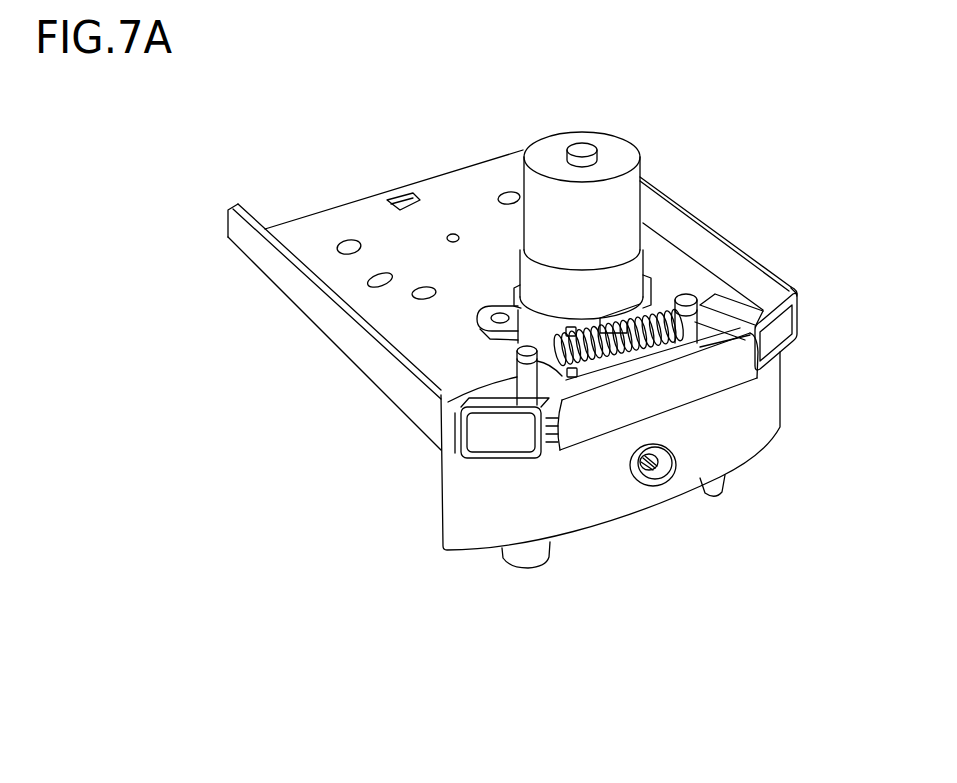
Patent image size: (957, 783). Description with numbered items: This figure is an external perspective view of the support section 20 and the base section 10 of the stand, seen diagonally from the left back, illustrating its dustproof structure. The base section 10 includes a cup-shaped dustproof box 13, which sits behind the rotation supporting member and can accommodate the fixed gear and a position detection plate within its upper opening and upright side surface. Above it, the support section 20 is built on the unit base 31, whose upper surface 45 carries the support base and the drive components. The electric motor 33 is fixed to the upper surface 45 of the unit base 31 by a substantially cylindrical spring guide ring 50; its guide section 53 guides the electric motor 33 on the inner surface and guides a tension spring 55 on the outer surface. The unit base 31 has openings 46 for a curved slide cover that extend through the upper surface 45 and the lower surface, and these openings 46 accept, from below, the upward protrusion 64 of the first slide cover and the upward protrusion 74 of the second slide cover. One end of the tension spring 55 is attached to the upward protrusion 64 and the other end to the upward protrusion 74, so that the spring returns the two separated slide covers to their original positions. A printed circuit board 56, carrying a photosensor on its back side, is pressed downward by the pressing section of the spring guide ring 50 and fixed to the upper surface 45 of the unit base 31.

The base section 10 is at (428, 560).
The dustproof box 13 is at (607, 509).
The support section 20 is at (710, 125).
The unit base 31 is at (285, 214).
The electric motor 33 is at (541, 158).
The upper surface 45 is at (320, 235).
The openings 46 is at (460, 408).
The spring guide ring 50 is at (495, 290).
The guide section 53 is at (478, 331).
The tension spring 55 is at (655, 312).
The printed circuit board 56 is at (667, 357).
The upward protrusion 64 is at (686, 293).
The upward protrusion 74 is at (510, 370).